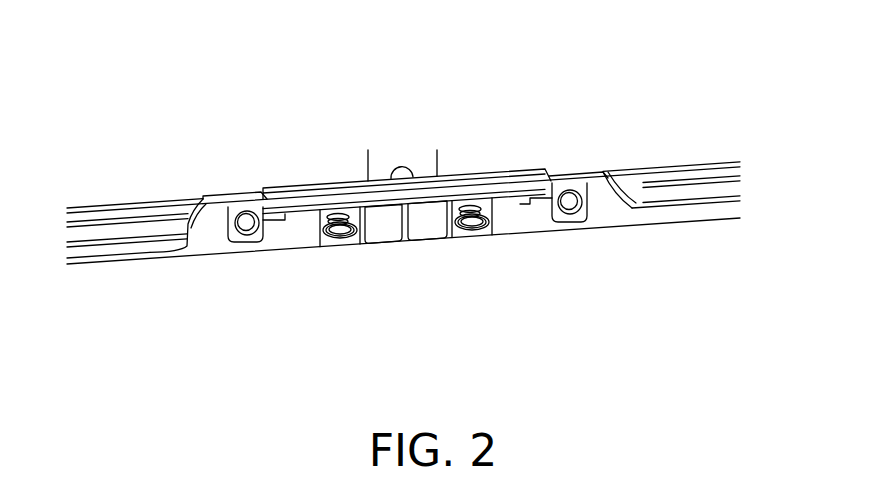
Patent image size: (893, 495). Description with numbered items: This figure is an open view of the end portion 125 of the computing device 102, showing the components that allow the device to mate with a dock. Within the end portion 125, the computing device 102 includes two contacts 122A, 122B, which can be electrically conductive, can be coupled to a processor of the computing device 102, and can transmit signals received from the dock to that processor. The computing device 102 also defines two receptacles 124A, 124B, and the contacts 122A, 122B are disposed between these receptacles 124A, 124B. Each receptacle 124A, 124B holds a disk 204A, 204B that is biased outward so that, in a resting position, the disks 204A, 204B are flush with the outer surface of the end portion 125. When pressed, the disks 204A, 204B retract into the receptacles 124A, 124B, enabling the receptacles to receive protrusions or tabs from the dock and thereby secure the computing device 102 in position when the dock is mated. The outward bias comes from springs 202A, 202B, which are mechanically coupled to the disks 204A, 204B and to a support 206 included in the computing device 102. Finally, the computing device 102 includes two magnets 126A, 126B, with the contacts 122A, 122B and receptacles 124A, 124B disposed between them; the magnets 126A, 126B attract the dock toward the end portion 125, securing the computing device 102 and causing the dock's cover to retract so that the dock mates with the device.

The computing device 102 is at (145, 120).
The spring 202A is at (334, 213).
The spring 202B is at (470, 205).
The support 206 is at (450, 197).
The disk 204A is at (328, 248).
The disk 204B is at (472, 242).
The receptacle 124A is at (350, 252).
The receptacle 124B is at (488, 242).
The contact 122A is at (390, 245).
The contact 122B is at (432, 243).
The end portion 125 is at (658, 238).
The magnet 126A is at (132, 250).
The magnet 126B is at (727, 220).